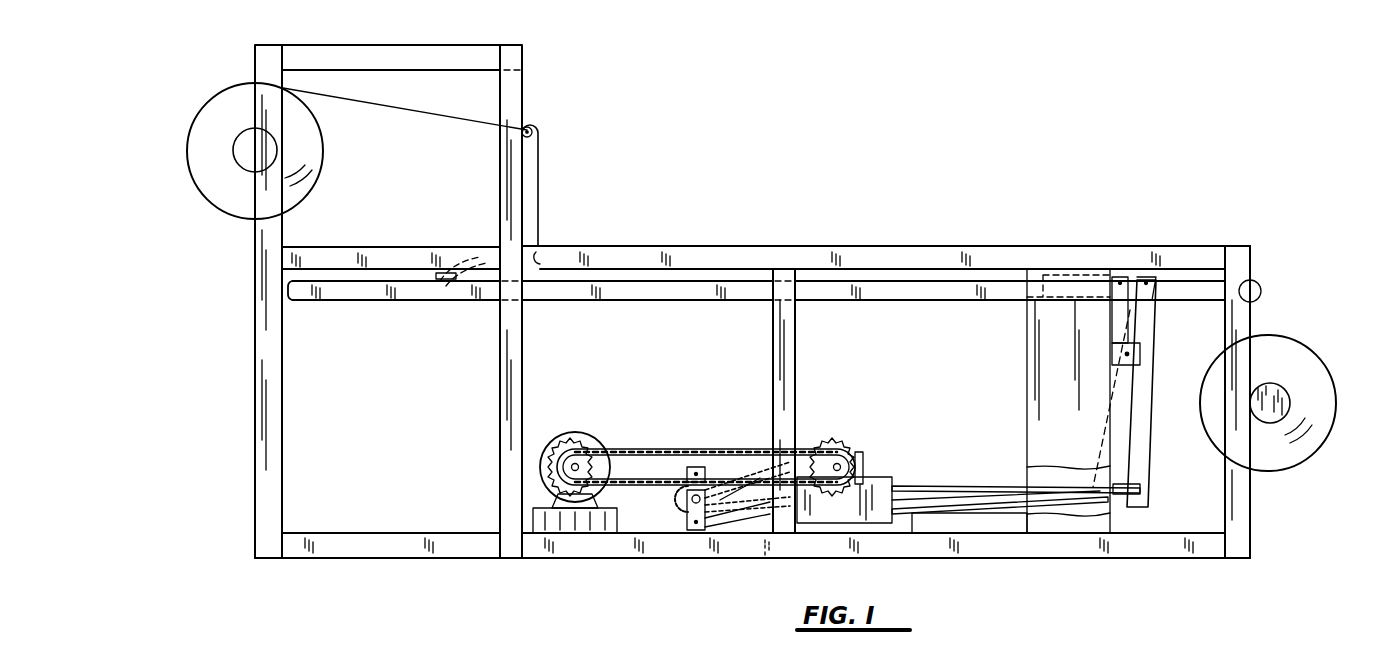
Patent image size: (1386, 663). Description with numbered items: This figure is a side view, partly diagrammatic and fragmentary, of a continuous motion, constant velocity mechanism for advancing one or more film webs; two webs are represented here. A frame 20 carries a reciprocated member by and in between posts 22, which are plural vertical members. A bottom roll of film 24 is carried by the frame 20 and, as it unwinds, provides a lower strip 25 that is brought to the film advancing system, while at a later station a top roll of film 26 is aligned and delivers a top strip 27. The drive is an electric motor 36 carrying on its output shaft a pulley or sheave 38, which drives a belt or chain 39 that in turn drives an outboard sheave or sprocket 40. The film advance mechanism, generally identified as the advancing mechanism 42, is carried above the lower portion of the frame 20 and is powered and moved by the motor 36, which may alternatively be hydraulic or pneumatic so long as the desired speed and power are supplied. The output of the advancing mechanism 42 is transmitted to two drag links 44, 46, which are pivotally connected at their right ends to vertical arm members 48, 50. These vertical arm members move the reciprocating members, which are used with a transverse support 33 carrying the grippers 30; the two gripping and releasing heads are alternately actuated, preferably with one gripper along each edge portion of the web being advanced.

The frame 20 is at (1074, 207).
The posts 22 is at (776, 330).
The bottom roll of film 24 is at (1305, 378).
The lower strip 25 is at (1262, 297).
The top roll of film 26 is at (205, 137).
The top strip 27 is at (538, 182).
The grippers 30 is at (441, 236).
The transverse support 33 is at (903, 288).
The electric motor 36 is at (580, 440).
The pulley or sheave 38 is at (571, 466).
The belt or chain 39 is at (655, 450).
The outboard sheave or sprocket 40 is at (838, 450).
The film advancing mechanism 42 is at (913, 431).
The drag link 44 is at (983, 506).
The drag link 46 is at (944, 489).
The vertical arm member 48 is at (1138, 470).
The vertical arm member 50 is at (1152, 310).